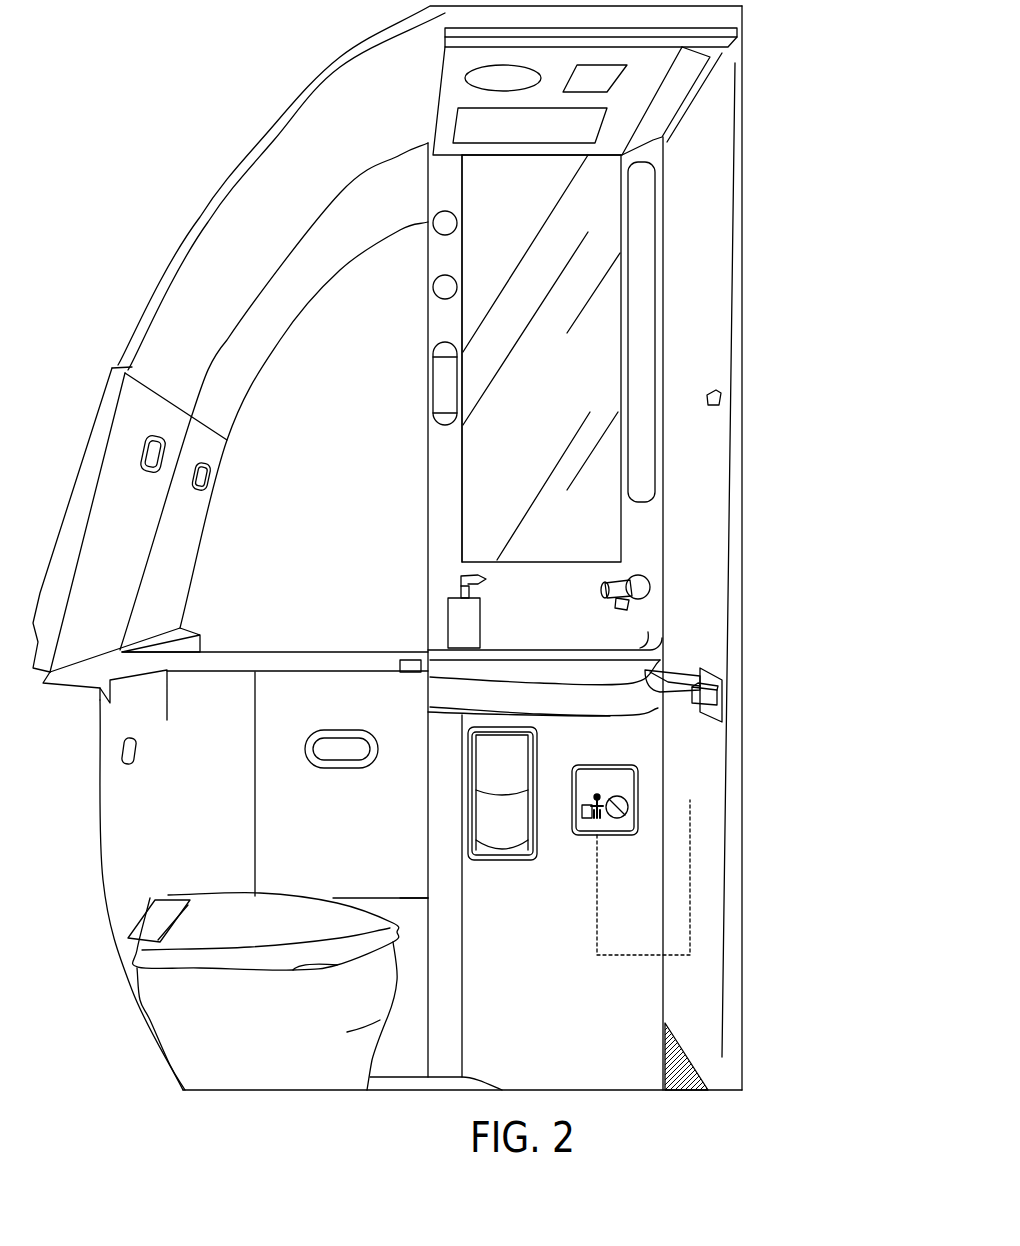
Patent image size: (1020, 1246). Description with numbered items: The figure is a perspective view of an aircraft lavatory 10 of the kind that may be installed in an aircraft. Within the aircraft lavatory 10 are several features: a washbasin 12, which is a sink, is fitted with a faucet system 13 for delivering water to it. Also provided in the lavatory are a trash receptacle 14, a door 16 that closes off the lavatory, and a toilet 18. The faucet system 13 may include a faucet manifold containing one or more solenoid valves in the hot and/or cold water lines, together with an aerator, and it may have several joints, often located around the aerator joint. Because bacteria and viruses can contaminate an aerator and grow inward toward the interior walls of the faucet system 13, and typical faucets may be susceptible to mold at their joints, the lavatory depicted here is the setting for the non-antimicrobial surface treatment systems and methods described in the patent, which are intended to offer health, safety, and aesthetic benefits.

The aircraft lavatory 10 is at (157, 105).
The washbasin 12 is at (569, 562).
The faucet system 13 is at (665, 553).
The trash receptacle 14 is at (645, 760).
The door 16 is at (750, 590).
The toilet 18 is at (320, 1047).